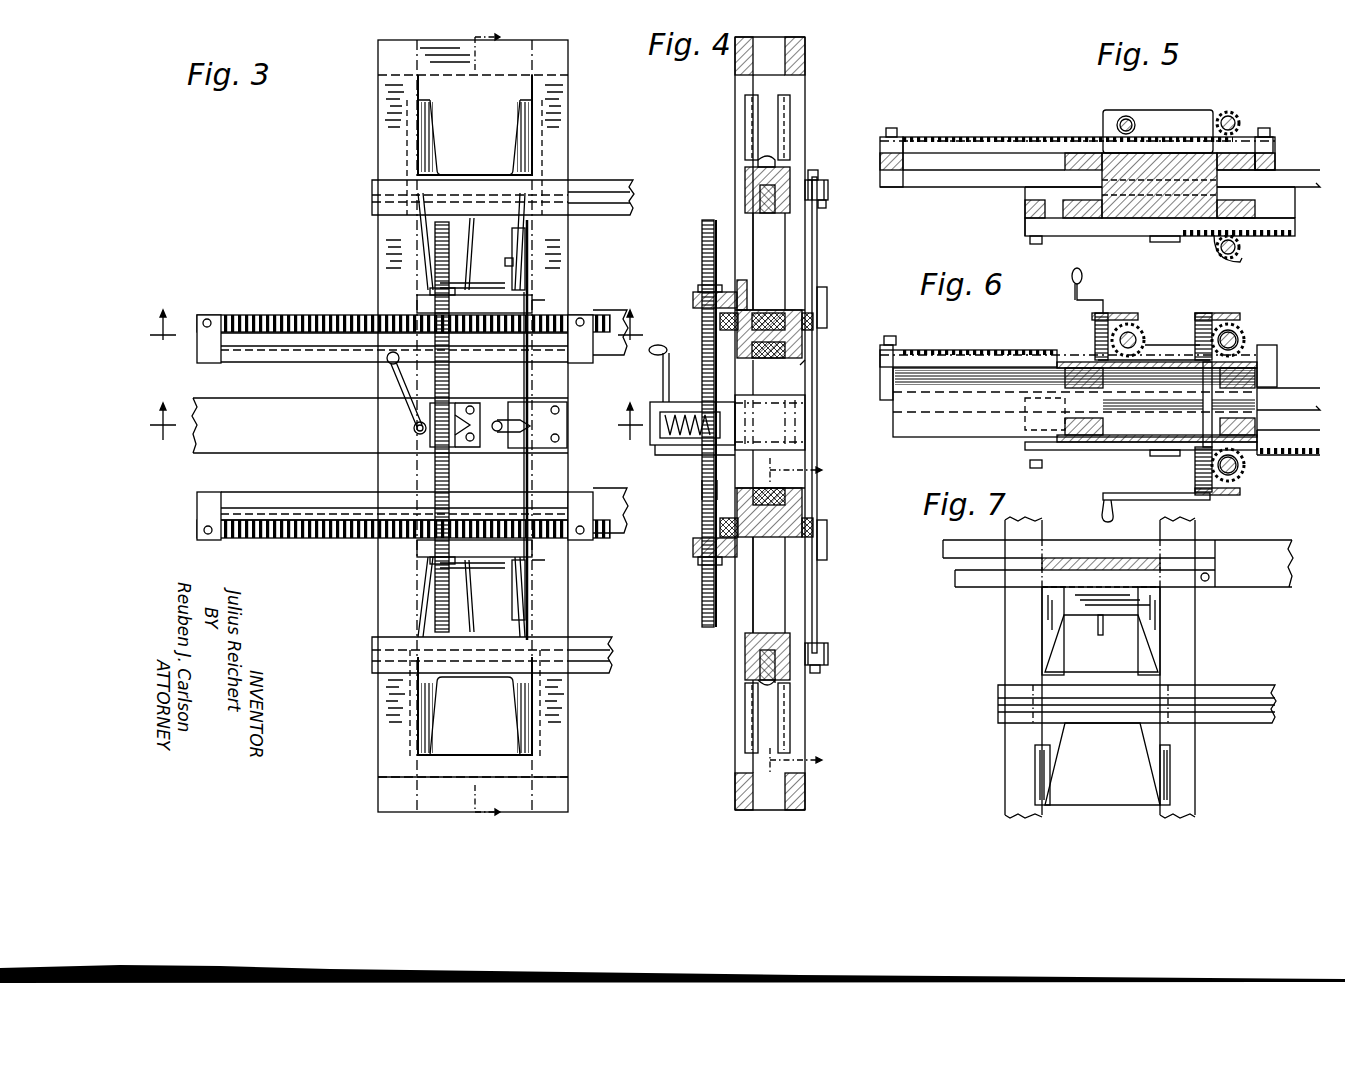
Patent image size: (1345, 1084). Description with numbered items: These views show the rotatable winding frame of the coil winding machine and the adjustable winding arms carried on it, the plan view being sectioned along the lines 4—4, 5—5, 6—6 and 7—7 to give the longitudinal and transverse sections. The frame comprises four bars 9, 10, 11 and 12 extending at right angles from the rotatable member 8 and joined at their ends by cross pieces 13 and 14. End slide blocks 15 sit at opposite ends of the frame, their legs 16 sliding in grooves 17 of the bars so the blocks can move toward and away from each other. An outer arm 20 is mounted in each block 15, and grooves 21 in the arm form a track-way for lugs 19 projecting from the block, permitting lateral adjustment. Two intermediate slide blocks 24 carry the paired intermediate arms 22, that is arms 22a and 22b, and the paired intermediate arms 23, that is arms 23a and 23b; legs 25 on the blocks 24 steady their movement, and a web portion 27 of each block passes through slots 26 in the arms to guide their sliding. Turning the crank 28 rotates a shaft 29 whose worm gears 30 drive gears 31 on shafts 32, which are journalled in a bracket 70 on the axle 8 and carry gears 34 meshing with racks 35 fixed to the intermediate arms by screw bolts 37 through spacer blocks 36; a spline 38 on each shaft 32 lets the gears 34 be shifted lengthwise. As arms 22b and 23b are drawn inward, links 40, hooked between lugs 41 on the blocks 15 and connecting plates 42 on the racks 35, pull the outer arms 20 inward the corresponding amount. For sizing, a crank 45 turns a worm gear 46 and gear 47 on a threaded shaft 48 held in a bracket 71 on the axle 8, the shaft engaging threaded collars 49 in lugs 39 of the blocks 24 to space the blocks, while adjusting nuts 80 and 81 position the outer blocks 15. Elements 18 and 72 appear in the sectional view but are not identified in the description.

In FIG. 3, the section line 4— 4 is at (487, 424).
In FIG. 3, the section line 5— 5 is at (396, 316).
In FIG. 3, the section line 6— 6 is at (396, 418).
In FIG. 4, the section line 7— 7 is at (804, 615).
In FIG. 3, the rotatable member 8 is at (290, 418).
In FIG. 4, the rotatable member 8 is at (790, 412).
In FIG. 6, the rotatable member 8 is at (897, 440).
In FIG. 4, the frame bar 9 is at (800, 800).
In FIG. 5, the frame bar 9 is at (1075, 222).
In FIG. 6, the frame bar 9 is at (1072, 448).
In FIG. 7, the frame bar 9 is at (1005, 778).
In FIG. 5, the frame bar 10 is at (1297, 225).
In FIG. 6, the frame bar 10 is at (1280, 428).
In FIG. 7, the frame bar 10 is at (1185, 767).
In FIG. 3, the frame bar 11 is at (390, 770).
In FIG. 4, the frame bar 11 is at (742, 787).
In FIG. 5, the frame bar 11 is at (1078, 150).
In FIG. 6, the frame bar 11 is at (1060, 370).
In FIG. 3, the frame bar 12 is at (560, 750).
In FIG. 5, the frame bar 12 is at (1240, 150).
In FIG. 6, the frame bar 12 is at (1270, 375).
In FIG. 3, the cross piece 13 is at (440, 791).
In FIG. 4, the cross piece 13 is at (790, 790).
In FIG. 3, the cross piece 14 is at (437, 57).
In FIG. 4, the cross piece 14 is at (780, 48).
In FIG. 3, the end slide block 15 is at (456, 672).
In FIG. 4, the end slide block 15 is at (790, 690).
In FIG. 7, the end slide block 15 is at (1095, 725).
In FIG. 3, the leg 16 is at (527, 712).
In FIG. 4, the leg 16 is at (790, 705).
In FIG. 7, the leg 16 is at (1148, 785).
In FIG. 4, the groove 17 is at (790, 605).
In FIG. 4, the rack bar 18 is at (752, 248).
In FIG. 4, the lug 19 is at (790, 640).
In FIG. 3, the outer arm 20 is at (575, 670).
In FIG. 4, the outer arm 20 is at (775, 672).
In FIG. 7, the outer arm 20 is at (1220, 688).
In FIG. 3, the groove 21 is at (578, 192).
In FIG. 4, the groove 21 is at (747, 185).
In FIG. 7, the groove 21 is at (1258, 697).
In FIG. 3, the slide bar 22 is at (612, 495).
In FIG. 3, the intermediate arm 22a is at (308, 495).
In FIG. 4, the intermediate arm 22a is at (752, 500).
In FIG. 4, the intermediate arm 22b is at (790, 500).
In FIG. 7, the intermediate arm 22b is at (1280, 545).
In FIG. 3, the slide bar 23 is at (600, 320).
In FIG. 3, the intermediate arm 23a is at (330, 348).
In FIG. 4, the intermediate arm 23a is at (740, 348).
In FIG. 5, the intermediate arm 23a is at (1283, 178).
In FIG. 6, the intermediate arm 23a is at (1295, 395).
In FIG. 4, the intermediate arm 23b is at (790, 350).
In FIG. 5, the intermediate arm 23b is at (1255, 196).
In FIG. 6, the intermediate arm 23b is at (1270, 430).
In FIG. 3, the intermediate slide block 24 is at (440, 575).
In FIG. 4, the intermediate slide block 24 is at (800, 510).
In FIG. 5, the intermediate slide block 24 is at (1158, 200).
In FIG. 7, the intermediate slide block 24 is at (1120, 600).
In FIG. 3, the leg 25 is at (527, 627).
In FIG. 4, the leg 25 is at (740, 612).
In FIG. 7, the leg 25 is at (1150, 640).
In FIG. 3, the slot 26 is at (248, 530).
In FIG. 7, the slot 26 is at (975, 570).
In FIG. 4, the web portion 27 is at (760, 520).
In FIG. 7, the web portion 27 is at (1070, 557).
In FIG. 6, the crank 28 is at (1130, 497).
In FIG. 6, the shaft 29 is at (1205, 425).
In FIG. 6, the worm gear 30 is at (1203, 470).
In FIG. 3, the gear 31 is at (535, 422).
In FIG. 6, the gear 31 is at (1243, 465).
In FIG. 3, the shaft 32 is at (513, 262).
In FIG. 5, the shaft 32 is at (1240, 250).
In FIG. 6, the shaft 32 is at (1240, 480).
In FIG. 3, the gear 34 is at (555, 560).
In FIG. 5, the gear 34 is at (1240, 258).
In FIG. 3, the rack member 35 is at (300, 540).
In FIG. 4, the rack member 35 is at (820, 530).
In FIG. 5, the rack member 35 is at (1088, 232).
In FIG. 6, the rack member 35 is at (1310, 458).
In FIG. 3, the spacer block 36 is at (585, 520).
In FIG. 5, the spacer block 36 is at (1030, 210).
In FIG. 6, the spacer block 36 is at (1268, 362).
In FIG. 3, the screw bolt 37 is at (583, 540).
In FIG. 5, the screw bolt 37 is at (1032, 244).
In FIG. 6, the screw bolt 37 is at (1035, 465).
In FIG. 3, the spline 38 is at (530, 480).
In FIG. 5, the spline 38 is at (1175, 118).
In FIG. 6, the spline 38 is at (1165, 330).
In FIG. 3, the lug 39 is at (525, 566).
In FIG. 4, the lug 39 is at (700, 548).
In FIG. 3, the link 40 is at (465, 615).
In FIG. 4, the link 40 is at (817, 577).
In FIG. 7, the link 40 is at (1103, 633).
In FIG. 4, the lug 41 is at (828, 658).
In FIG. 4, the connecting plate 42 is at (828, 540).
In FIG. 5, the connecting plate 42 is at (1165, 242).
In FIG. 6, the connecting plate 42 is at (1150, 457).
In FIG. 3, the crank 45 is at (390, 360).
In FIG. 4, the crank 45 is at (672, 373).
In FIG. 6, the crank 45 is at (1088, 292).
In FIG. 3, the worm gear 46 is at (418, 428).
In FIG. 6, the worm gear 46 is at (1090, 353).
In FIG. 3, the gear 47 is at (455, 440).
In FIG. 4, the gear 47 is at (680, 445).
In FIG. 6, the gear 47 is at (1130, 325).
In FIG. 3, the shaft 48 is at (440, 522).
In FIG. 4, the shaft 48 is at (710, 487).
In FIG. 5, the shaft 48 is at (1130, 118).
In FIG. 6, the shaft 48 is at (1140, 332).
In FIG. 3, the threaded collar 49 is at (428, 560).
In FIG. 4, the threaded collar 49 is at (710, 570).
In FIG. 3, the bracket 70 is at (562, 430).
In FIG. 6, the bracket 70 is at (1215, 490).
In FIG. 3, the bracket 71 is at (450, 450).
In FIG. 6, the bracket 71 is at (1108, 320).
In FIG. 4, the spring housing 72 is at (690, 420).
In FIG. 4, the threaded adjusting nut 80 is at (820, 670).
In FIG. 4, the threaded adjusting nut 81 is at (828, 650).